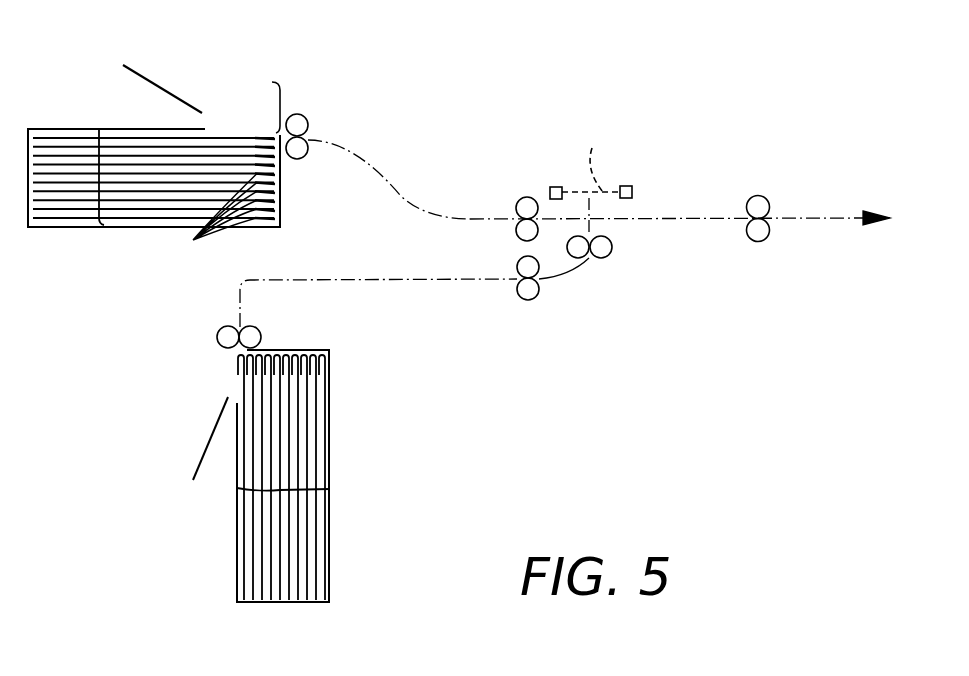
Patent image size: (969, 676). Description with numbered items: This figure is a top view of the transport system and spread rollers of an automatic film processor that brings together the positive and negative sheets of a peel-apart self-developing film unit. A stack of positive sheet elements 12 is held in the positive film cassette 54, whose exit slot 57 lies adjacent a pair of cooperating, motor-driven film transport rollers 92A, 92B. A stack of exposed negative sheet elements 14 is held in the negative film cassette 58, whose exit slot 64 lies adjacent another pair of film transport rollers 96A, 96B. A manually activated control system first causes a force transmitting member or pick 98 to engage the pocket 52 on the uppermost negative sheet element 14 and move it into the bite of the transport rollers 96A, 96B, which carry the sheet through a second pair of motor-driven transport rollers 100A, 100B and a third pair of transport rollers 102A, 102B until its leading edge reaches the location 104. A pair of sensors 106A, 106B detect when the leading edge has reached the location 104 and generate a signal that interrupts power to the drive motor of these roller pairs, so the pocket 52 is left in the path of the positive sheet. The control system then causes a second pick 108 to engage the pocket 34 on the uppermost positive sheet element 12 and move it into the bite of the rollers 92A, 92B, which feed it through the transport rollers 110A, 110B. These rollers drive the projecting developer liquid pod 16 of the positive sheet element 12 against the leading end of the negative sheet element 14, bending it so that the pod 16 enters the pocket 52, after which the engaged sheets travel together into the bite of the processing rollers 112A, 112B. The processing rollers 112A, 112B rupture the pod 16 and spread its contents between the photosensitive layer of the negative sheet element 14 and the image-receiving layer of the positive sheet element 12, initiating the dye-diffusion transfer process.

The positive sheet element 12 is at (99, 178).
The negative sheet element 14 is at (283, 490).
The developer liquid pod 16 is at (193, 240).
The pocket 34 is at (236, 120).
The pocket 52 is at (230, 381).
The positive film cassette 54 is at (173, 128).
The exit slot 57 is at (262, 105).
The negative film cassette 58 is at (329, 418).
The exit slot 64 is at (237, 348).
The film transport roller 92A is at (302, 114).
The film transport roller 92B is at (302, 160).
The film transport roller 96A is at (225, 330).
The film transport roller 96B is at (254, 330).
The pick 98 is at (205, 447).
The transport roller 100A is at (516, 267).
The transport roller 100B is at (516, 290).
The transport roller 102A is at (580, 258).
The transport roller 102B is at (612, 252).
The location 104 is at (595, 165).
The sensor 106A is at (556, 186).
The sensor 106B is at (632, 186).
The pick 108 is at (152, 80).
The transport roller 110A is at (541, 198).
The transport roller 110B is at (518, 228).
The processing roller 112A is at (760, 195).
The processing roller 112B is at (765, 242).